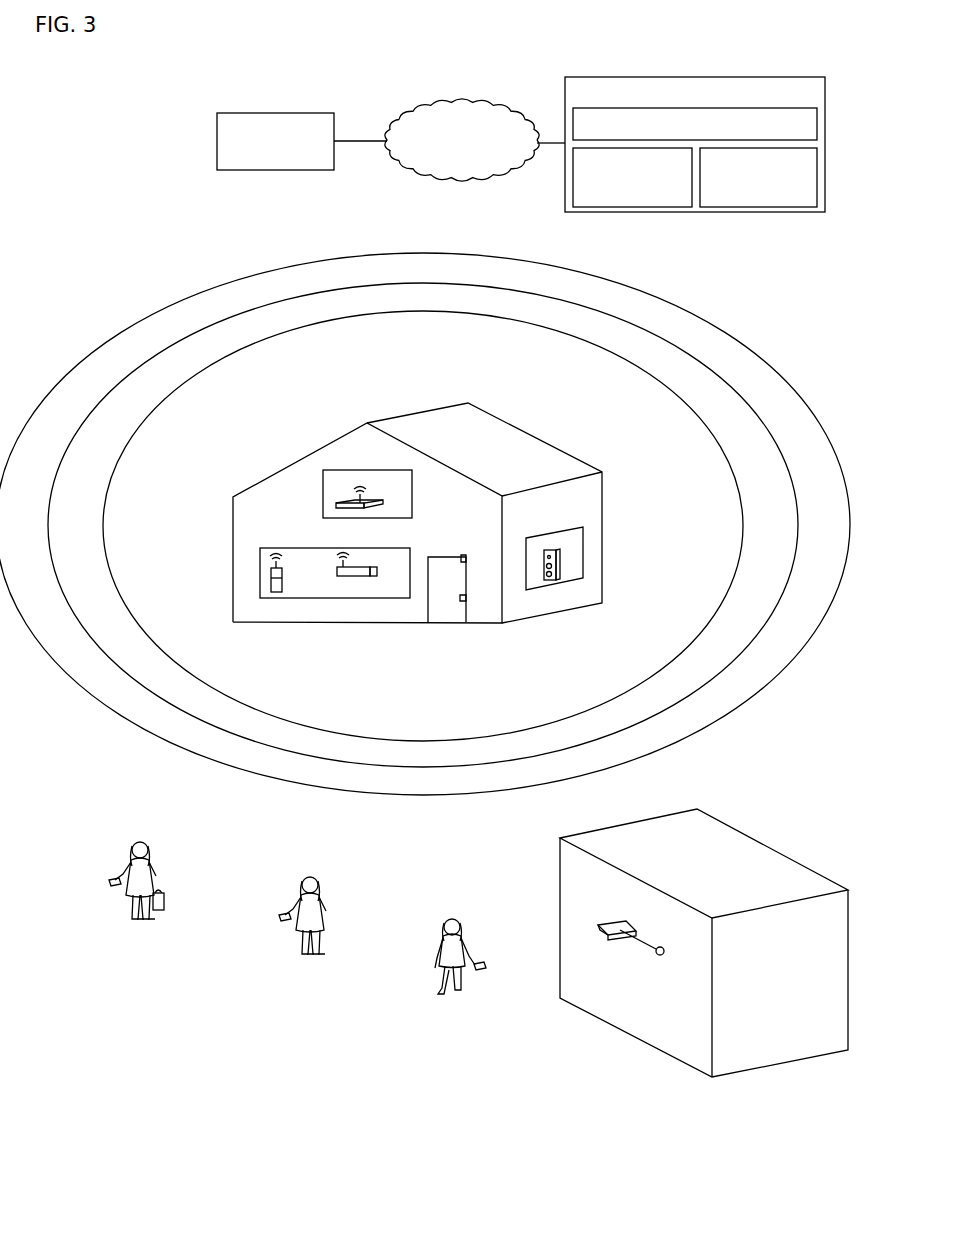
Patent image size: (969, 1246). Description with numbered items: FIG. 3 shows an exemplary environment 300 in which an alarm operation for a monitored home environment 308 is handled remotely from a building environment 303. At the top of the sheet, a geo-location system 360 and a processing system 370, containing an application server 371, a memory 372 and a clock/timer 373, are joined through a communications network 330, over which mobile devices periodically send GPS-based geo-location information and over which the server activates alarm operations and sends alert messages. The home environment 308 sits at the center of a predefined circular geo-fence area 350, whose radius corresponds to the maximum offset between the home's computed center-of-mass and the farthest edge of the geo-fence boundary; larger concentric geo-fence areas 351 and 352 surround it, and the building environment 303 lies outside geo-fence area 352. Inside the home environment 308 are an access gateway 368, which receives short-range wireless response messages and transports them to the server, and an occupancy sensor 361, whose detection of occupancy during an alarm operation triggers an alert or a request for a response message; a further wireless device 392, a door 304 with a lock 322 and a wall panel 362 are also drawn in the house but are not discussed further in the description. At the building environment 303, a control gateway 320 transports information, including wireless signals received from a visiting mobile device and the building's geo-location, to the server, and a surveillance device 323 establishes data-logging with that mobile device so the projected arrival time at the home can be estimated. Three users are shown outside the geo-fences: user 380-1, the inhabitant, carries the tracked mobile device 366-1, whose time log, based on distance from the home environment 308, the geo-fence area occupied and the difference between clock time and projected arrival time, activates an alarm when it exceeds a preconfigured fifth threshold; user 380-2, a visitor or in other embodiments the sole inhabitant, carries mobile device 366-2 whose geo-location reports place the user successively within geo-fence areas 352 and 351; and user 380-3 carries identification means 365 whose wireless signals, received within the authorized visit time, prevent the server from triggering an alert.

The environment 300 is at (425, 562).
The geo-location system 360 is at (275, 141).
The communications network 330 is at (462, 140).
The processing system 370 is at (695, 144).
The application server 371 is at (695, 124).
The memory 372 is at (632, 177).
The clock / timer 373 is at (758, 177).
The monitored home environment 308 is at (417, 518).
The access gateway 368 is at (367, 494).
The occupancy sensor 361 is at (295, 573).
The wireless router 392 is at (364, 574).
The door 304 is at (447, 601).
The door lock 322 is at (473, 568).
The control panel 362 is at (554, 566).
The geo-fence area 350 is at (423, 526).
The geo-fence area 351 is at (423, 525).
The geo-fence area 352 is at (425, 524).
The building environment 303 is at (704, 930).
The control gateway 320 is at (610, 920).
The surveillance device 323 is at (657, 953).
The user 380-1 is at (115, 870).
The mobile device 366-1 is at (91, 882).
The user 380-2 is at (282, 905).
The mobile device 366-2 is at (259, 918).
The user 380-3 is at (474, 945).
The identification means 365 is at (495, 969).